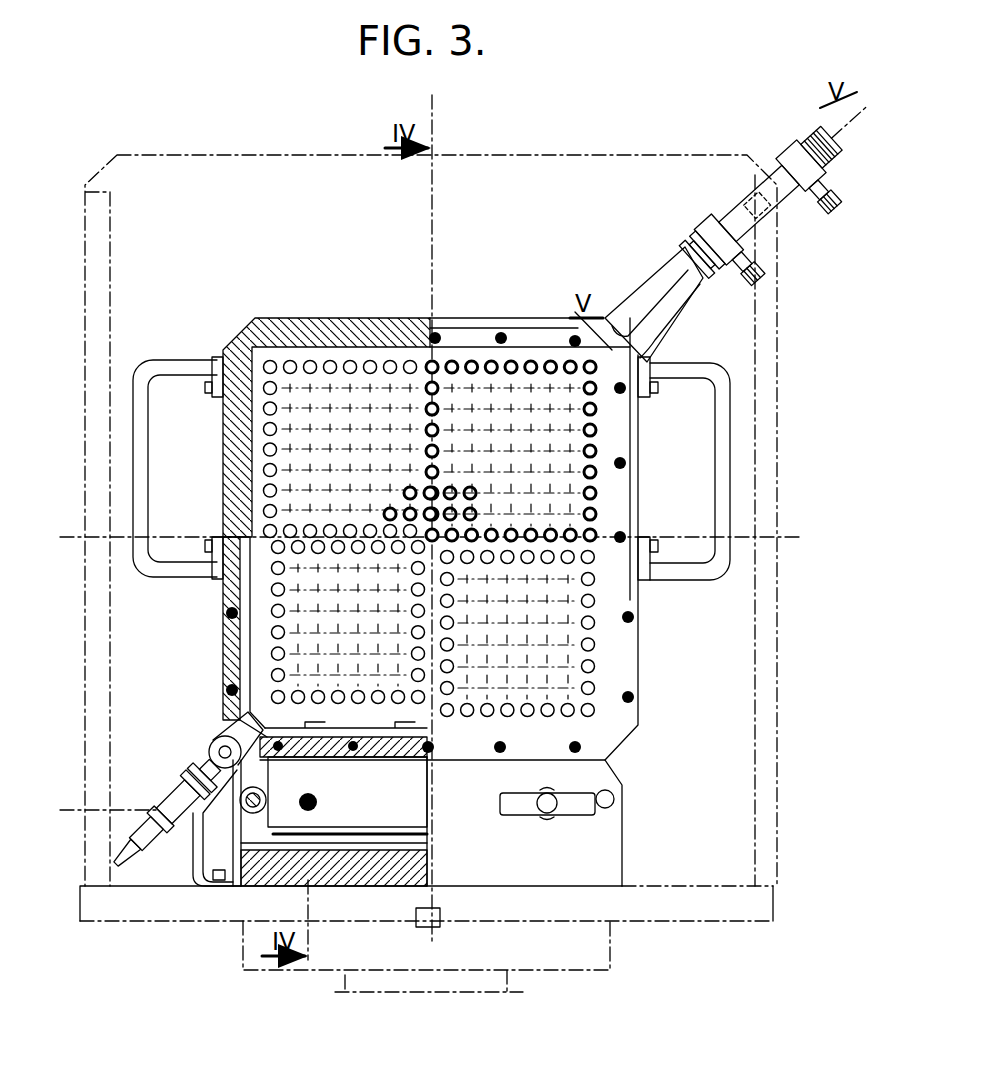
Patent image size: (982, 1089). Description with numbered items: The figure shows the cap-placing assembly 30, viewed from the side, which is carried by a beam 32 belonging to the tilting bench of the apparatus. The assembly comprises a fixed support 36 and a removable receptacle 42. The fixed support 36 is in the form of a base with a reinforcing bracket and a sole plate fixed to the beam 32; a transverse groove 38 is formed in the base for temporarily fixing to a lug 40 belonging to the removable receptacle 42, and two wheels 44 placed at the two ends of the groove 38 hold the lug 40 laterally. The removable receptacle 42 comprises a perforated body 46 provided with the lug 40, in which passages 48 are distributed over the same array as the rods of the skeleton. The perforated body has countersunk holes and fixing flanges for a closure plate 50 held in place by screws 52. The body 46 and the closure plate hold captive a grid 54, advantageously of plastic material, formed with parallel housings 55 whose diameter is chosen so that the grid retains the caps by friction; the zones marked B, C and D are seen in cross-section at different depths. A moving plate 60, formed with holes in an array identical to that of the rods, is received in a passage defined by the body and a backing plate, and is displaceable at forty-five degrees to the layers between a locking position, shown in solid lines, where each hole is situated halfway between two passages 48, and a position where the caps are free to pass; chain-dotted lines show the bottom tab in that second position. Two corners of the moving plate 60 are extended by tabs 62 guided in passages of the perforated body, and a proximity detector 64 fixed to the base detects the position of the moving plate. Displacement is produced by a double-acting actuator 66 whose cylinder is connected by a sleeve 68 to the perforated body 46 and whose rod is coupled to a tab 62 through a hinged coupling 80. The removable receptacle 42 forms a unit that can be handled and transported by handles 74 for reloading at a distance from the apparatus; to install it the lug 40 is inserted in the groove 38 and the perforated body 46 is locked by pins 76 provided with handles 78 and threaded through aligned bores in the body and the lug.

The cap-placing assembly 30 is at (652, 205).
The beam 32 is at (553, 970).
The fixed support 36 is at (561, 821).
The transverse groove 38 is at (223, 872).
The lug 40 is at (392, 815).
The removable receptacle 42 is at (434, 519).
The wheels 44 is at (217, 827).
The perforated body 46 is at (618, 725).
The passages 48 is at (277, 655).
The closure plate 50 is at (480, 410).
The screws 52 is at (504, 334).
The grid 54 is at (323, 397).
The housings 55 is at (268, 362).
The moving plate 60 is at (258, 627).
The tabs 62 is at (220, 737).
The proximity detector 64 is at (128, 818).
The double-acting actuator 66 is at (728, 243).
The sleeve 68 is at (755, 225).
The handles 74 is at (137, 383).
The pins 76 is at (255, 830).
The handles 78 is at (522, 808).
The hinge pin 80 is at (216, 751).